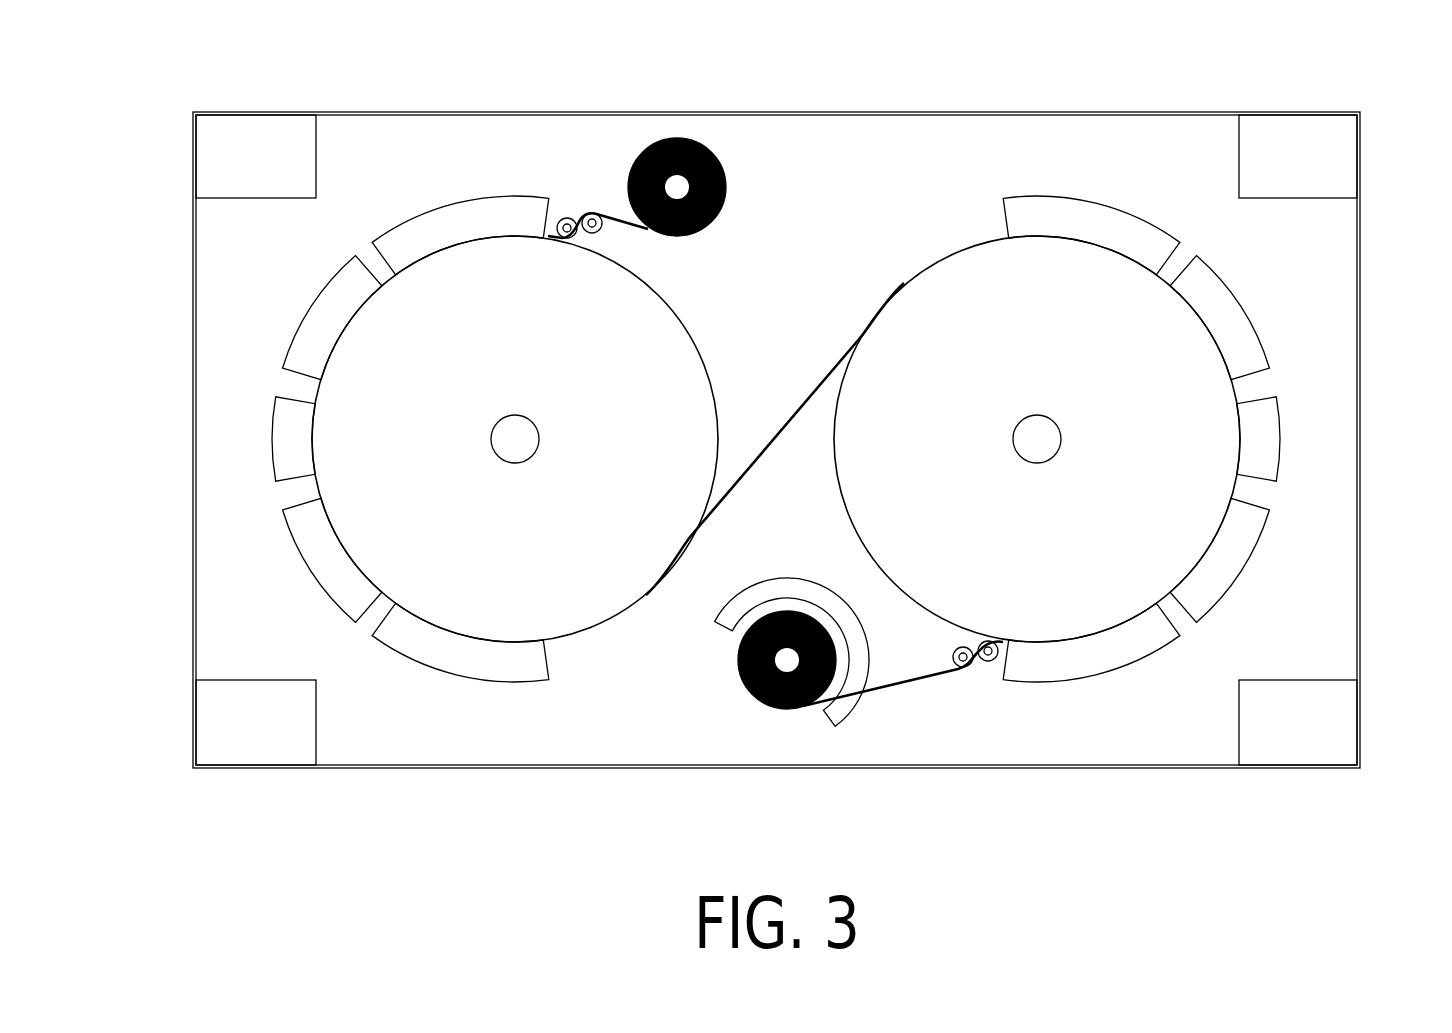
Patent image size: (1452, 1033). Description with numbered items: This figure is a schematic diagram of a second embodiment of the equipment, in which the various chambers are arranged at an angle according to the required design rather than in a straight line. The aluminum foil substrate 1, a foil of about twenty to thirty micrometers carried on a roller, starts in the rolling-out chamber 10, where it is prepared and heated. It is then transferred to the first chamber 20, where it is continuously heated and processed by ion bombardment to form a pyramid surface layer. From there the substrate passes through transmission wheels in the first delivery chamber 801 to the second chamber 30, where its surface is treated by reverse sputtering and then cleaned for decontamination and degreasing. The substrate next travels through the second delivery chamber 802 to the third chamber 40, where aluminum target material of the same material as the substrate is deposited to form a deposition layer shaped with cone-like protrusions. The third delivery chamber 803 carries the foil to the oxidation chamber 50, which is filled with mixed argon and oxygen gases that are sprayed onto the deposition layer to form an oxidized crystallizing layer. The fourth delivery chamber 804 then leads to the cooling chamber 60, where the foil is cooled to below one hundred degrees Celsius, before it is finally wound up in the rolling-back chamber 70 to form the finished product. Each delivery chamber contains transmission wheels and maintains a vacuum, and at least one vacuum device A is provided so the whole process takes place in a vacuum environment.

The aluminum foil substrate 1 is at (682, 160).
The rolling-out chamber 10 is at (459, 223).
The first chamber 20 is at (332, 310).
The second chamber 30 is at (317, 556).
The third chamber 40 is at (1112, 225).
The oxidation chamber 50 is at (1267, 447).
The cooling chamber 60 is at (1105, 652).
The rolling-back chamber 70 is at (878, 710).
The first delivery chamber 801 is at (293, 423).
The second delivery chamber 802 is at (442, 653).
The third delivery chamber 803 is at (1248, 335).
The fourth delivery chamber 804 is at (1222, 565).
The vacuum device A is at (1286, 135).